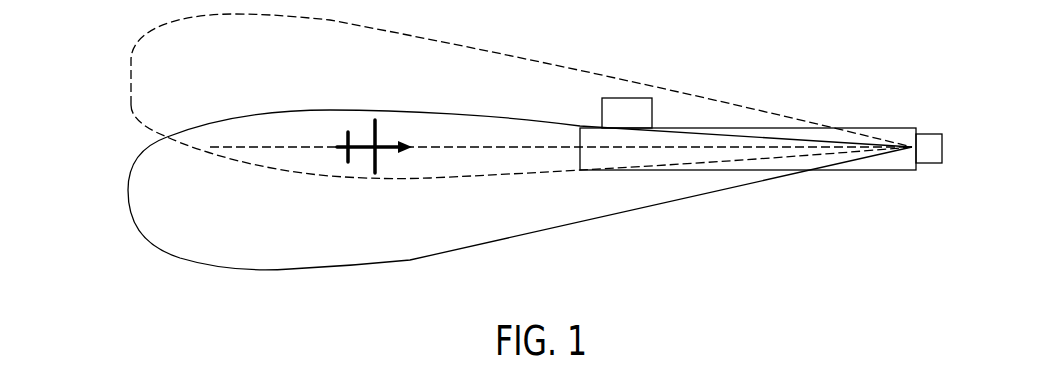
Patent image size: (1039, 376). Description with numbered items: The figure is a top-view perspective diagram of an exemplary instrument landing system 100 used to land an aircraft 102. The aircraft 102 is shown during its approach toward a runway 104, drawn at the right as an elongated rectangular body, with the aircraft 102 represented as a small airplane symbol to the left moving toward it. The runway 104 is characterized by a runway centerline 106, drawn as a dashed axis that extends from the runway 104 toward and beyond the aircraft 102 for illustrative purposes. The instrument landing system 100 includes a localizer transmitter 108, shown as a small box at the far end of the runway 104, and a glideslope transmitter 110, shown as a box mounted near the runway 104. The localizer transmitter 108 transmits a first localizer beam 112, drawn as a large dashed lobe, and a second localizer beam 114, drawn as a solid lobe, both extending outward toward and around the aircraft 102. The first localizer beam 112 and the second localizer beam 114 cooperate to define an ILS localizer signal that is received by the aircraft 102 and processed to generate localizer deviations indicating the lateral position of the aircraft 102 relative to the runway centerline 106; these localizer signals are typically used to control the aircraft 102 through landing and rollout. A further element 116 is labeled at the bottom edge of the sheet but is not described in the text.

The instrument landing system 100 is at (749, 58).
The aircraft 102 is at (367, 163).
The runway 104 is at (879, 128).
The runway centerline 106 is at (605, 147).
The localizer transmitter 108 is at (942, 133).
The glideslope transmitter 110 is at (629, 98).
The first localizer beam 112 is at (131, 102).
The second localizer beam 114 is at (128, 192).
The ground 116 is at (137, 363).